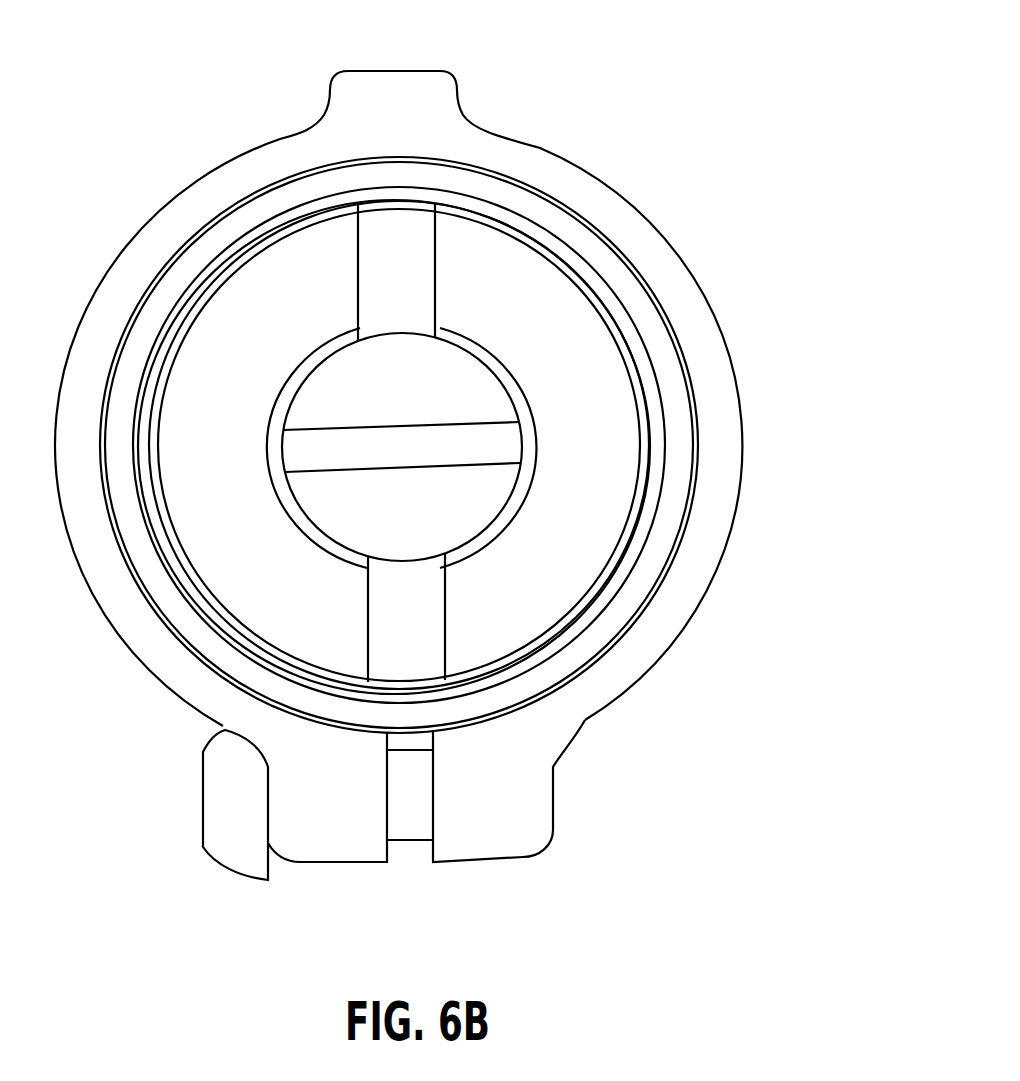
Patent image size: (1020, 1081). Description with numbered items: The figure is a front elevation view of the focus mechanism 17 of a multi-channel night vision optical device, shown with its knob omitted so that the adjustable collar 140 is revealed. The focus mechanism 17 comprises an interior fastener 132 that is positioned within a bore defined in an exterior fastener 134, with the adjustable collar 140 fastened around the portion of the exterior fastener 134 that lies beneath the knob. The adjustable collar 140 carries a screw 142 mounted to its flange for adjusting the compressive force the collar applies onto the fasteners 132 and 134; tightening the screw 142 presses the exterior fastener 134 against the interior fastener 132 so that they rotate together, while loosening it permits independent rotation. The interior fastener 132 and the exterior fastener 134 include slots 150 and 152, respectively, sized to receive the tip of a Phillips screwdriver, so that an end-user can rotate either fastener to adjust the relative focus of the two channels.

The focus mechanism 17 is at (740, 30).
The interior fastener 132 is at (445, 515).
The exterior fastener 134 is at (605, 482).
The adjustable collar 140 is at (523, 807).
The screw 142 is at (222, 823).
The slot 150 is at (460, 443).
The slot 152 is at (378, 273).